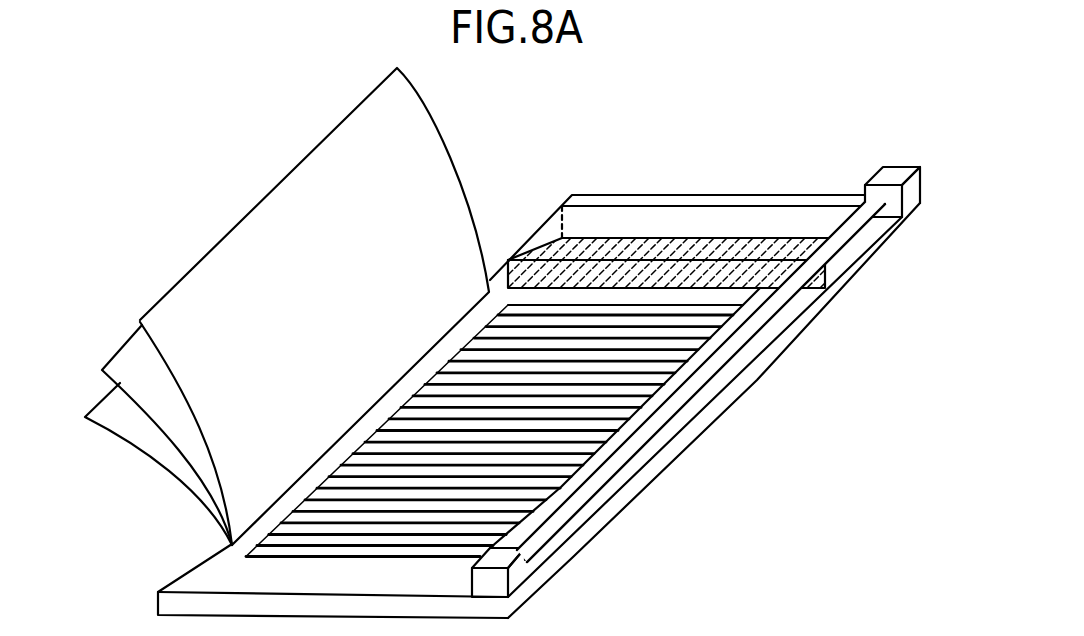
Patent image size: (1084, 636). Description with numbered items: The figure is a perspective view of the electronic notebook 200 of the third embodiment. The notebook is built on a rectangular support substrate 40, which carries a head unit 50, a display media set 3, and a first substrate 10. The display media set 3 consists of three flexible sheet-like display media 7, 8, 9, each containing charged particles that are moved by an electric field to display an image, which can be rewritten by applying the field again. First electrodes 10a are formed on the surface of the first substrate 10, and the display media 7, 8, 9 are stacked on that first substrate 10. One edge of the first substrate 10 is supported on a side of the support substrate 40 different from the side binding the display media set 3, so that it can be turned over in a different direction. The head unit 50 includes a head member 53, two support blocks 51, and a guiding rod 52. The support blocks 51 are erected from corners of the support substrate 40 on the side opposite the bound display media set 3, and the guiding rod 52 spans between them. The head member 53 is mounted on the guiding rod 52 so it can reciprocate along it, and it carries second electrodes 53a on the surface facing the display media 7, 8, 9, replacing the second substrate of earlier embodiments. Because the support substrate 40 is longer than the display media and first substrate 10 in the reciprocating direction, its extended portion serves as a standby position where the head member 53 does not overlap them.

The electronic notebook 200 is at (213, 176).
The display media set 3 is at (149, 392).
The display medium 7 is at (158, 316).
The display medium 8 is at (127, 363).
The display medium 9 is at (156, 442).
The first substrate 10 is at (377, 552).
The first electrodes 10a is at (463, 533).
The support substrate 40 is at (657, 468).
The head unit 50 is at (715, 390).
The support blocks 51 is at (513, 578).
The guiding rod 52 is at (797, 303).
The head member 53 is at (868, 230).
The second electrodes 53a is at (677, 238).